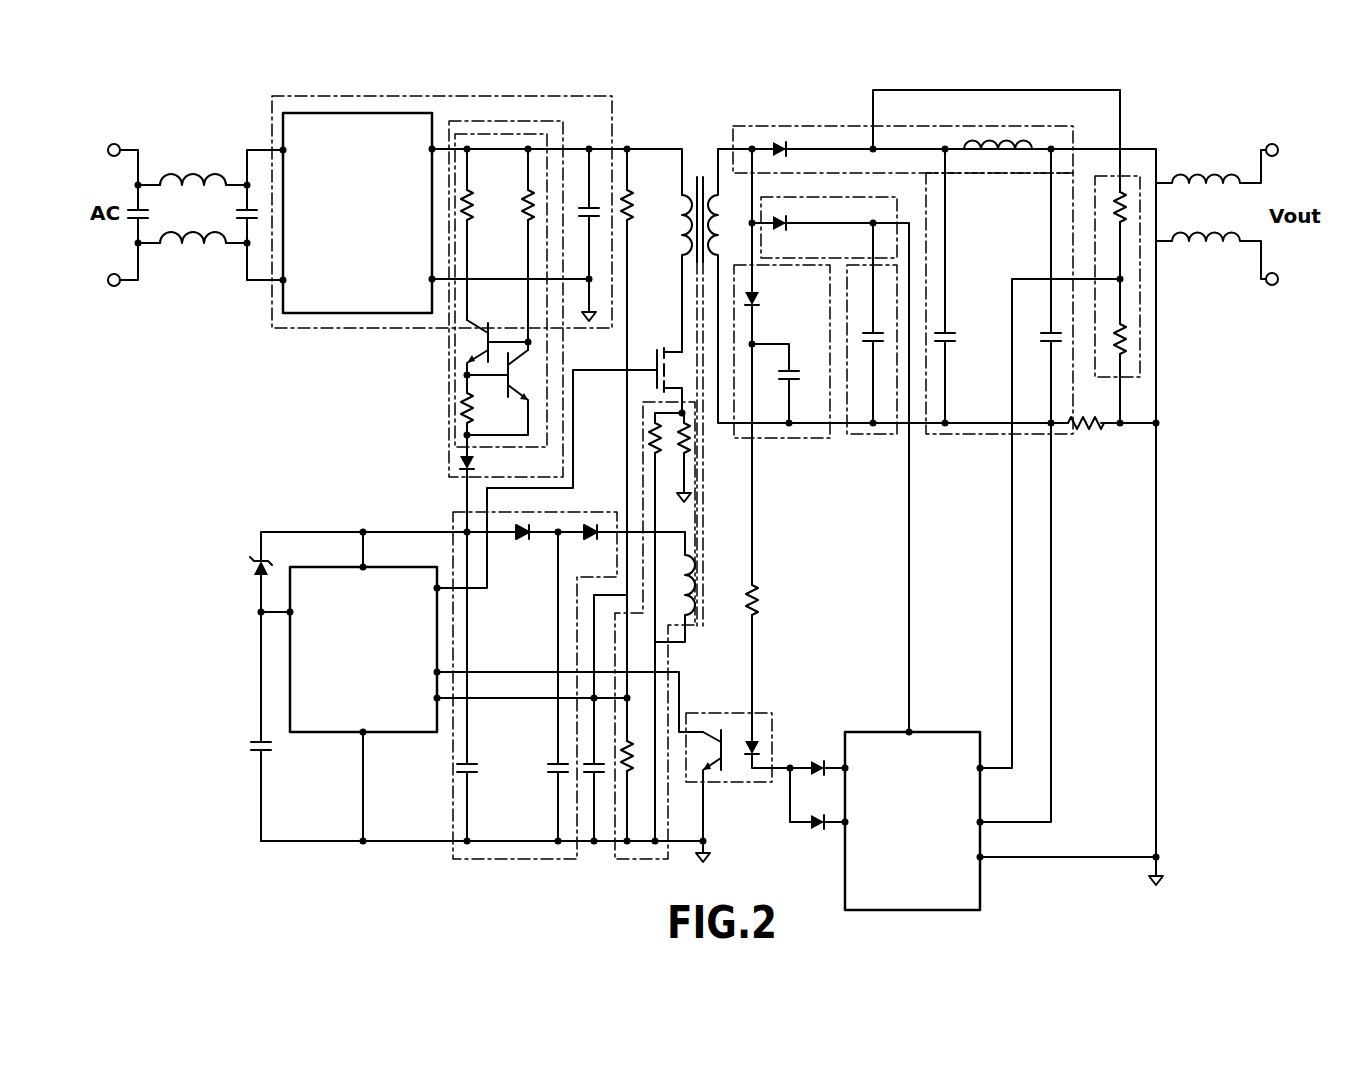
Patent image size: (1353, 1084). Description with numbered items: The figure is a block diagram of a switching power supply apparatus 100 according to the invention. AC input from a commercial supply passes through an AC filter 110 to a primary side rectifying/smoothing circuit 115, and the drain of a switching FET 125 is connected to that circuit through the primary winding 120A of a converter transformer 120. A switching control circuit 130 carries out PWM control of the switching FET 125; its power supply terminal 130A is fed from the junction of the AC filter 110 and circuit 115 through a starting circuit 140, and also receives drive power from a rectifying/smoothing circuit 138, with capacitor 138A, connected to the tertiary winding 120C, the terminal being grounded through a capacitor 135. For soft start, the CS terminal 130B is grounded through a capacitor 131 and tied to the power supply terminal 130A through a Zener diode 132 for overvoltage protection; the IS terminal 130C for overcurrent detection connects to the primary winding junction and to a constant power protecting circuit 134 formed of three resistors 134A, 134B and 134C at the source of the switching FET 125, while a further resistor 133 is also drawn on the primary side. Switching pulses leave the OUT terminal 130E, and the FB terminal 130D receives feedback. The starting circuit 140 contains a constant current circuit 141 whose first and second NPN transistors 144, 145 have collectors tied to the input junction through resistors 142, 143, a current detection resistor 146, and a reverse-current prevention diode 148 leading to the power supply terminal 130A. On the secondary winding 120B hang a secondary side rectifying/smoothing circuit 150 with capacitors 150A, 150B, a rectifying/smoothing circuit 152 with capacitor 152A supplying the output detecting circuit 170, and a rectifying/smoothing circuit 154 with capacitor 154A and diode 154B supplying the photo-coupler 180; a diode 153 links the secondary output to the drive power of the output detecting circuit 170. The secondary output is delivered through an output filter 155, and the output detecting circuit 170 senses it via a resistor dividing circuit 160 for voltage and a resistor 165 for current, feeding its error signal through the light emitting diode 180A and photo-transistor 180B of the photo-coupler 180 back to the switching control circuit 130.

The switching power supply apparatus 100 is at (237, 788).
The AC filter 110 is at (190, 252).
The primary side rectifying/smoothing circuit 115 is at (272, 125).
The converter transformer 120 is at (843, 461).
The primary winding 120A is at (686, 196).
The secondary winding 120B is at (716, 196).
The tertiary winding 120C is at (698, 571).
The switching FET 125 is at (656, 357).
The switching control circuit 130 is at (434, 672).
The power supply terminal 130A is at (362, 567).
The CS terminal 130B is at (290, 612).
The IS terminal 130C is at (440, 700).
The FB terminal 130D is at (440, 672).
The OUT terminal 130E is at (440, 589).
The capacitor 131 is at (252, 748).
The Zener diode 132 is at (255, 563).
The resistor 133 is at (633, 217).
The constant power protecting circuit 134 is at (647, 645).
The resistor 134A is at (680, 435).
The resistor 134B is at (655, 450).
The resistor 134C is at (638, 765).
The capacitor 135 is at (478, 769).
The rectifying/smoothing circuit 138 is at (535, 714).
The capacitor 138A is at (554, 764).
The starting circuit 140 is at (477, 326).
The constant current circuit 141 is at (472, 306).
The resistor 142 is at (473, 203).
The resistor 143 is at (527, 205).
The first NPN transistor 144 is at (480, 336).
The second NPN transistor 145 is at (505, 377).
The resistor 146 is at (468, 415).
The reverse-current prevention diode 148 is at (462, 463).
The secondary side rectifying/smoothing circuit 150 is at (999, 483).
The capacitor 150A is at (948, 328).
The capacitor 150B is at (1046, 330).
The rectifying/smoothing circuit 152 is at (831, 343).
The capacitor 152A is at (868, 325).
The diode 153 is at (785, 217).
The rectifying/smoothing circuit 154 is at (788, 339).
The capacitor 154A is at (795, 380).
The diode 154B is at (790, 306).
The output filter 155 is at (1210, 193).
The resistor dividing circuit 160 is at (1144, 305).
The resistor 165 is at (1091, 425).
The output detecting circuit 170 is at (845, 865).
The photo-coupler 180 is at (767, 599).
The light emitting diode 180A is at (755, 747).
The photo-transistor 180B is at (712, 730).